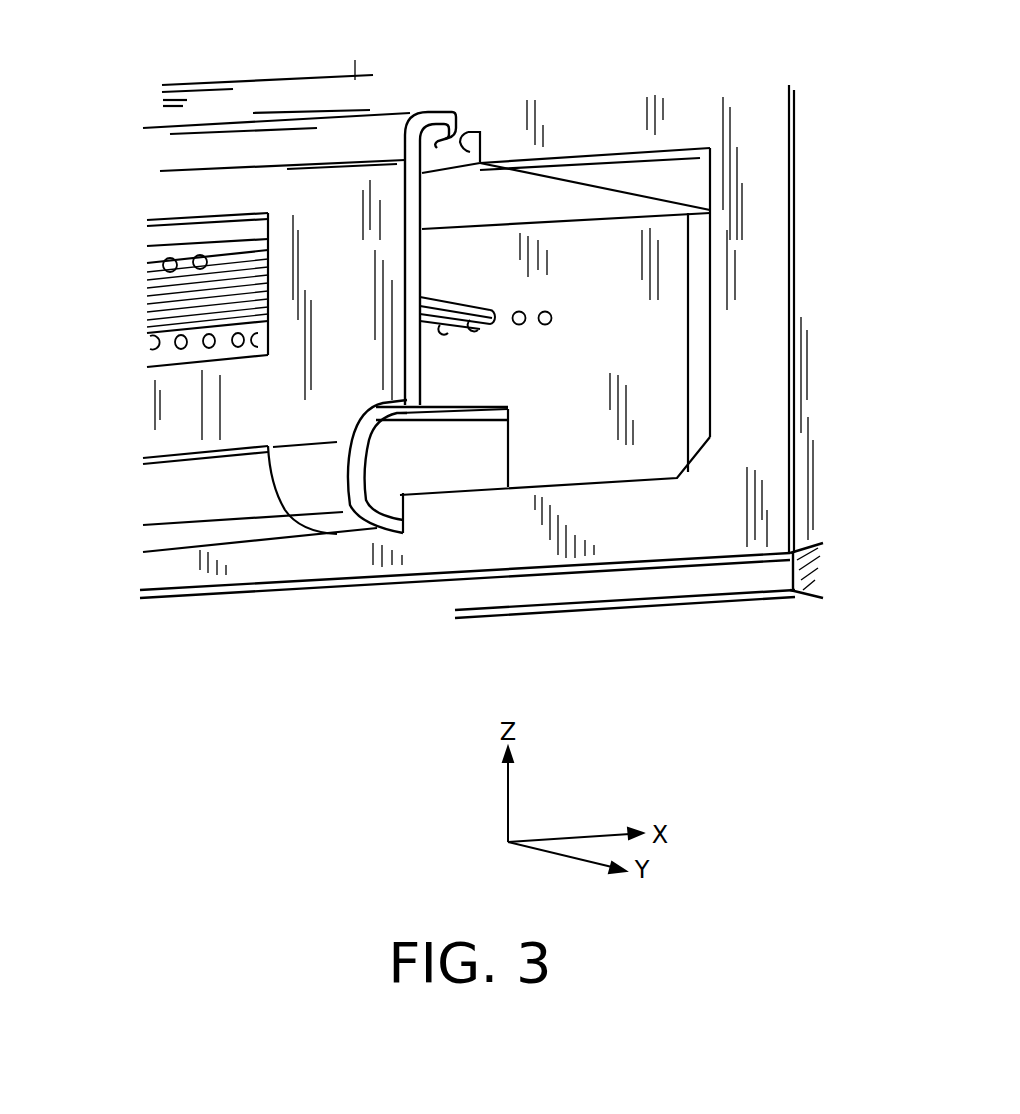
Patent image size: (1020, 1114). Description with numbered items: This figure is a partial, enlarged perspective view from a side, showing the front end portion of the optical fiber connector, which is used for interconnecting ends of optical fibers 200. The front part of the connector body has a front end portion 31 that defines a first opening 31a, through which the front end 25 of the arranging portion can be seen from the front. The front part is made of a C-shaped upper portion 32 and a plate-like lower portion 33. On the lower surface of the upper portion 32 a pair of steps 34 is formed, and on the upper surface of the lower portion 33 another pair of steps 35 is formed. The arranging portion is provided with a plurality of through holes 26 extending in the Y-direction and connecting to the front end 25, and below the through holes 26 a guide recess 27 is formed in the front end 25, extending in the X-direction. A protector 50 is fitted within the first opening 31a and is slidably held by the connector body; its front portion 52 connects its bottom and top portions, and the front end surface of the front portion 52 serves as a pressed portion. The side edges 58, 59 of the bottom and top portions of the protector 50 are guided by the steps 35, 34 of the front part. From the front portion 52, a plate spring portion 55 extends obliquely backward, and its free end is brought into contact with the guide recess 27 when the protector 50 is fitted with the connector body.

The front end 25 is at (660, 378).
The through holes 26 is at (519, 312).
The guide recess 27 is at (467, 448).
The front end portion 31 is at (763, 300).
The first opening 31a is at (642, 232).
The upper portion 32 is at (257, 97).
The lower portion 33 is at (623, 612).
The steps 34 is at (480, 153).
The steps 35 is at (347, 510).
The protector 50 is at (175, 191).
The front portion 52 is at (380, 210).
The plate spring portion 55 is at (173, 415).
The side edge 58 is at (383, 530).
The side edge 59 is at (433, 124).
The optical fibers 200 is at (438, 310).